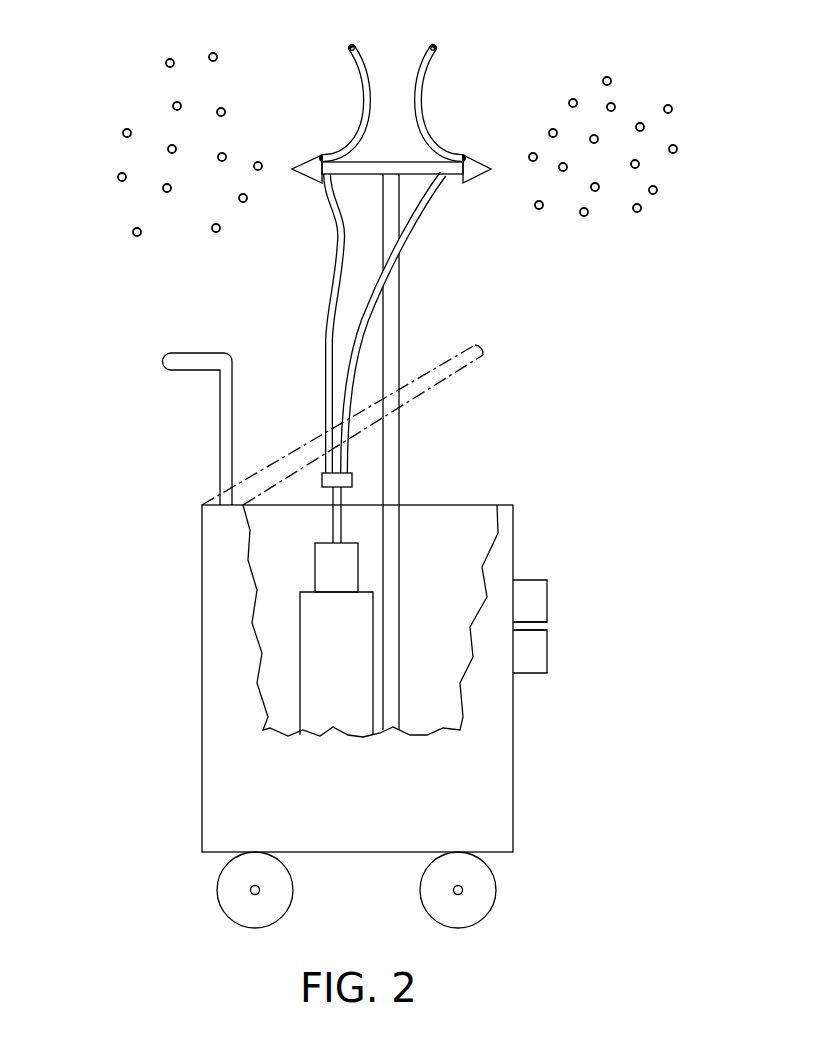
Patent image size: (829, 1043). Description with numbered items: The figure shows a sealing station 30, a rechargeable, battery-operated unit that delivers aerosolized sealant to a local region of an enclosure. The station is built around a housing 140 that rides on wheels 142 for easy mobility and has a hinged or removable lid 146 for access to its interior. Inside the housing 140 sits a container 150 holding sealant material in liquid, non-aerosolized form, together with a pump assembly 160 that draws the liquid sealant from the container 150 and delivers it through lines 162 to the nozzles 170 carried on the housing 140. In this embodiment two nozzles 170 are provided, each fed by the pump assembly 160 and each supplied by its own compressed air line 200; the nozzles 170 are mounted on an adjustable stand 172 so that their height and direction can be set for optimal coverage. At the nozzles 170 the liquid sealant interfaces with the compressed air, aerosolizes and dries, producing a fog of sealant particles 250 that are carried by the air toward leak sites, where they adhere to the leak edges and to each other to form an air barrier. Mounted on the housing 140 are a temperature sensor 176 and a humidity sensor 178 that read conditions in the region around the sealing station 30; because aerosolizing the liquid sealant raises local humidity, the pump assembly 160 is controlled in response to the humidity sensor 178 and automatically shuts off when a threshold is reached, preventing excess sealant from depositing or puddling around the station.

The sealing station 30 is at (594, 431).
The housing 140 is at (202, 680).
The wheels 142 is at (497, 888).
The hinged or removable lid 146 is at (220, 412).
The container 150 is at (359, 677).
The pump assembly 160 is at (315, 568).
The hoses 162 is at (335, 240).
The nozzles 170 is at (312, 162).
The adjustable stand 172 is at (400, 440).
The temperature sensor 176 is at (547, 603).
The humidity sensor 178 is at (547, 652).
The compressed air line 200 is at (358, 70).
The sealant particles 250 is at (123, 134).